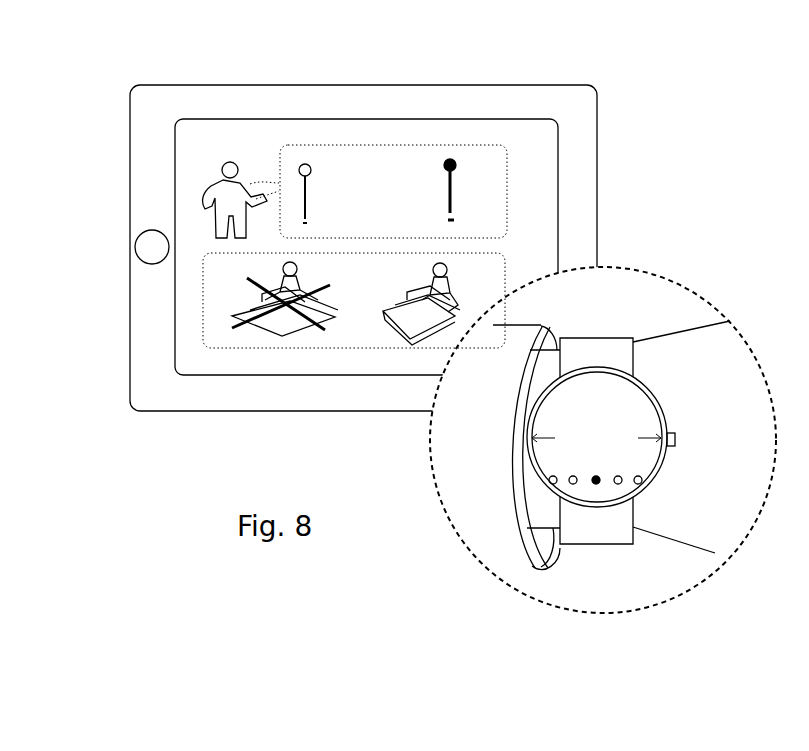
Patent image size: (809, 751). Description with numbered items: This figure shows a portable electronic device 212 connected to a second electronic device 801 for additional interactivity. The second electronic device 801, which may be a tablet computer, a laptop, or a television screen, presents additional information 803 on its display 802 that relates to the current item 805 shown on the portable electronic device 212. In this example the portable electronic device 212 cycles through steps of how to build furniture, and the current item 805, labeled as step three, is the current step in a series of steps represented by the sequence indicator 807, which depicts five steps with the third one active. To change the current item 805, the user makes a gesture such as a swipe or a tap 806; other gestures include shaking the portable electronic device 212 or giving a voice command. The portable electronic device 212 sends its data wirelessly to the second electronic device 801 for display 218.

The second electronic device 801 is at (130, 113).
The display 802 is at (273, 118).
The additional information 803 is at (334, 136).
The current item 805 is at (594, 393).
The swipe or tap 806 is at (643, 425).
The sequence indicator 807 is at (540, 481).
The display 218 is at (647, 458).
The portable electronic device 212 is at (540, 566).